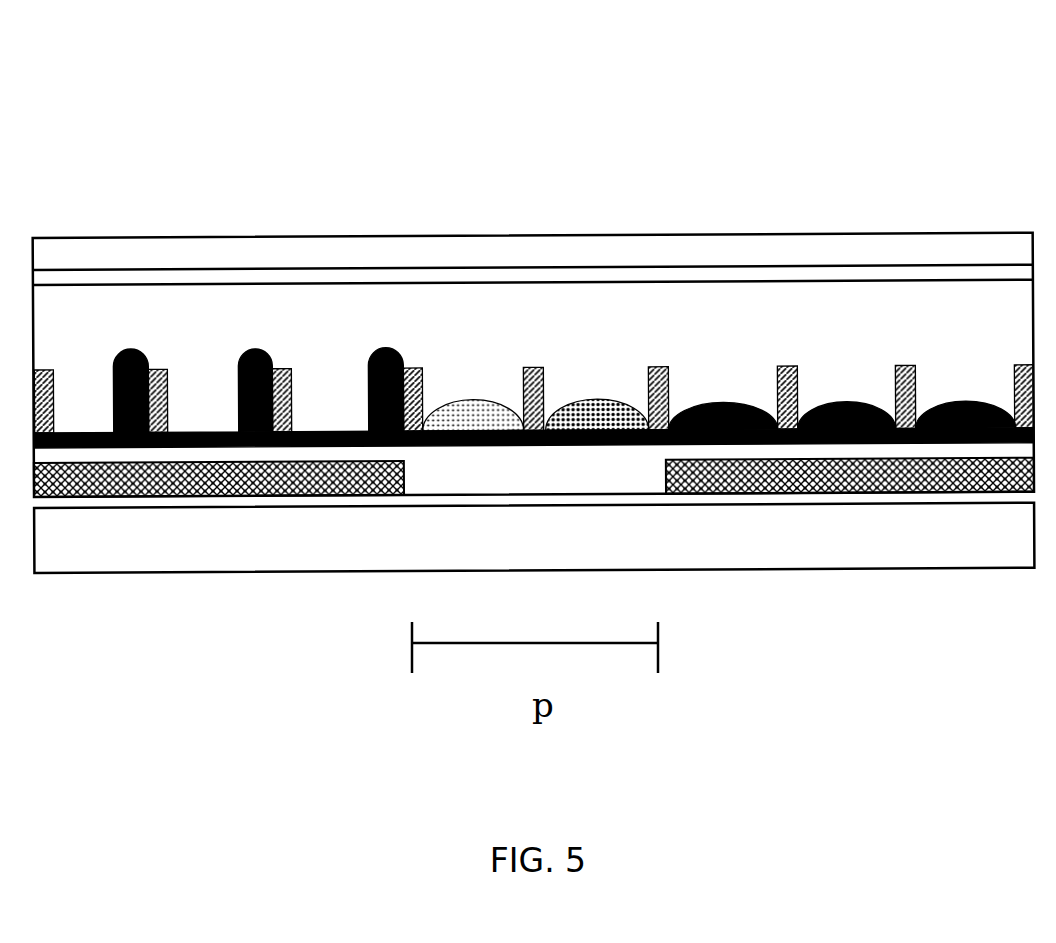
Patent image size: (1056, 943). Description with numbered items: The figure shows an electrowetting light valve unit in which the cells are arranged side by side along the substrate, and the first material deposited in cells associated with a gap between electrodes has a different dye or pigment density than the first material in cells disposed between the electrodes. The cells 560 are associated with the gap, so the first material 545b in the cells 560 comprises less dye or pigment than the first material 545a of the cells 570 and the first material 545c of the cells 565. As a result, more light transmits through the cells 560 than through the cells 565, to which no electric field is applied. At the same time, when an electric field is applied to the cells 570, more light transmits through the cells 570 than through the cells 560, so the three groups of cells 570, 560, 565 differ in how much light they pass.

The cells 570 is at (318, 359).
The cells 560 is at (604, 342).
The cells 565 is at (960, 338).
The first material 545a is at (237, 370).
The first material 545b is at (568, 368).
The first material 545c is at (842, 372).